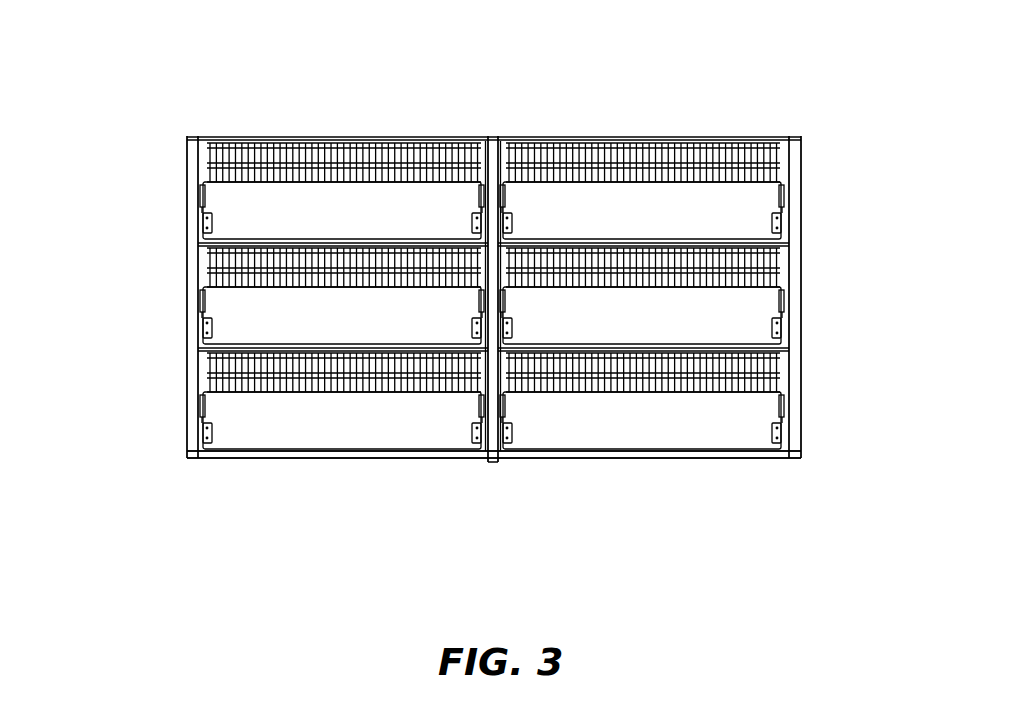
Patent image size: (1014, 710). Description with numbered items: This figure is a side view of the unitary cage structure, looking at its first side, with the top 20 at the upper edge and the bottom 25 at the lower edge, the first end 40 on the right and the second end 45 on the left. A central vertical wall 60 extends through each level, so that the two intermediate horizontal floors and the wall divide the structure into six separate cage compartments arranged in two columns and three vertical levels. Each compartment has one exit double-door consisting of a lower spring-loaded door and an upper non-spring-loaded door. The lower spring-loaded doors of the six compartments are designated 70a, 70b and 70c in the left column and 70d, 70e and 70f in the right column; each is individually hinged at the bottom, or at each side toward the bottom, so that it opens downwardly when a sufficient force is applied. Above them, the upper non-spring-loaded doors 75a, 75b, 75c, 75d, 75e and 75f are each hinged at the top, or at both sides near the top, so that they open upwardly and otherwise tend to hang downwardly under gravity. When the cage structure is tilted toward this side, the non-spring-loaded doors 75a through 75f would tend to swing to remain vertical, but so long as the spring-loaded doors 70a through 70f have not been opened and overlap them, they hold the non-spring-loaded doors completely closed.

The top 20 is at (453, 112).
The bottom 25 is at (453, 480).
The first end 40 is at (818, 342).
The second end 45 is at (170, 343).
The vertical wall 60 is at (492, 447).
The lower spring-loaded door 70a is at (232, 202).
The lower spring-loaded door 70b is at (232, 313).
The lower spring-loaded door 70c is at (232, 420).
The lower spring-loaded door 70d is at (772, 200).
The lower spring-loaded door 70e is at (772, 312).
The lower spring-loaded door 70f is at (772, 420).
The upper non-spring-loaded door 75a is at (215, 165).
The upper non-spring-loaded door 75b is at (215, 266).
The upper non-spring-loaded door 75c is at (215, 372).
The upper non-spring-loaded door 75d is at (772, 163).
The upper non-spring-loaded door 75e is at (772, 265).
The upper non-spring-loaded door 75f is at (772, 372).